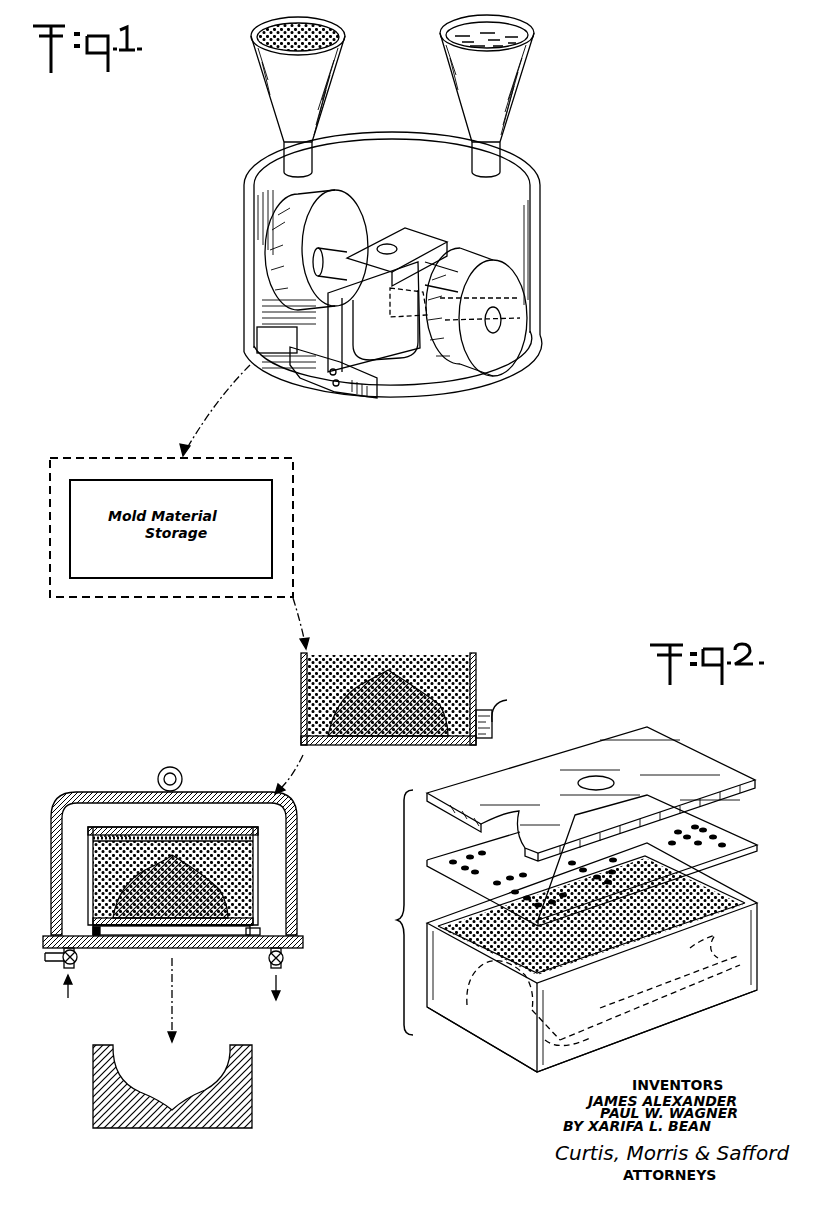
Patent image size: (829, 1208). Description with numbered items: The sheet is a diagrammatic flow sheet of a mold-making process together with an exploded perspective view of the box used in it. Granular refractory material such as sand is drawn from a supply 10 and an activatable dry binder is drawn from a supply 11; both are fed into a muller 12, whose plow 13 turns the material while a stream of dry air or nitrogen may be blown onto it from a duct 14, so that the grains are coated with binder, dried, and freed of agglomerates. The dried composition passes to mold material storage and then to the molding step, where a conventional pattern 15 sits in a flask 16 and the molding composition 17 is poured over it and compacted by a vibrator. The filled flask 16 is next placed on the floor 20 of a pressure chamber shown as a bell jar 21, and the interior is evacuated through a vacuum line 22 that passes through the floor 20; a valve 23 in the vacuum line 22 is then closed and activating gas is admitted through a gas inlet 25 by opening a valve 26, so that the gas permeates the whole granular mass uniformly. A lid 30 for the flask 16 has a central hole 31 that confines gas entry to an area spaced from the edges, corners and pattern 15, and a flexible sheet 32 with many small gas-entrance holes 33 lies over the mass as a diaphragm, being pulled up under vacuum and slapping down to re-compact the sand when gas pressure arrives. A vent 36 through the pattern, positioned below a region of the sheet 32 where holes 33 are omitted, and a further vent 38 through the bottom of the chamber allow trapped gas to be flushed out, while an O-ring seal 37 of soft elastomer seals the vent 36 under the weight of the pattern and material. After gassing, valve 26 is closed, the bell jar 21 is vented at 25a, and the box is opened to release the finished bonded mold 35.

In FIG. 1, the supply of granular material 10 is at (331, 92).
In FIG. 1, the supply of binder material 11 is at (518, 92).
In FIG. 1, the muller 12 is at (543, 243).
In FIG. 1, the plow 13 is at (517, 292).
In FIG. 1, the duct 14 is at (262, 345).
In FIG. 1, the pattern 15 is at (405, 690).
In FIG. 2, the pattern 15 is at (563, 1045).
In FIG. 1, the flask 16 is at (478, 670).
In FIG. 2, the flask 16 is at (437, 1020).
In FIG. 1, the molding composition 17 is at (463, 645).
In FIG. 2, the molding composition 17 is at (731, 900).
In FIG. 1, the floor 20 is at (304, 941).
In FIG. 1, the bell jar 21 is at (68, 800).
In FIG. 1, the vacuum line 22 is at (283, 970).
In FIG. 1, the valve 23 is at (285, 958).
In FIG. 1, the gas inlet 25 is at (78, 963).
In FIG. 1, the vent 25a is at (56, 958).
In FIG. 1, the valve 26 is at (80, 956).
In FIG. 1, the lid 30 is at (208, 828).
In FIG. 2, the lid 30 is at (680, 745).
In FIG. 1, the hole 31 is at (172, 830).
In FIG. 2, the hole 31 is at (600, 787).
In FIG. 1, the flexible sheet 32 is at (244, 853).
In FIG. 2, the flexible sheet 32 is at (716, 826).
In FIG. 1, the gas-entrance holes 33 is at (104, 839).
In FIG. 2, the gas-entrance holes 33 is at (480, 874).
In FIG. 1, the bonded mold 35 is at (256, 1044).
In FIG. 1, the vent 36 is at (262, 920).
In FIG. 2, the vent 36 is at (660, 1020).
In FIG. 1, the O-ring seal 37 is at (260, 947).
In FIG. 1, the vent 38 is at (195, 938).